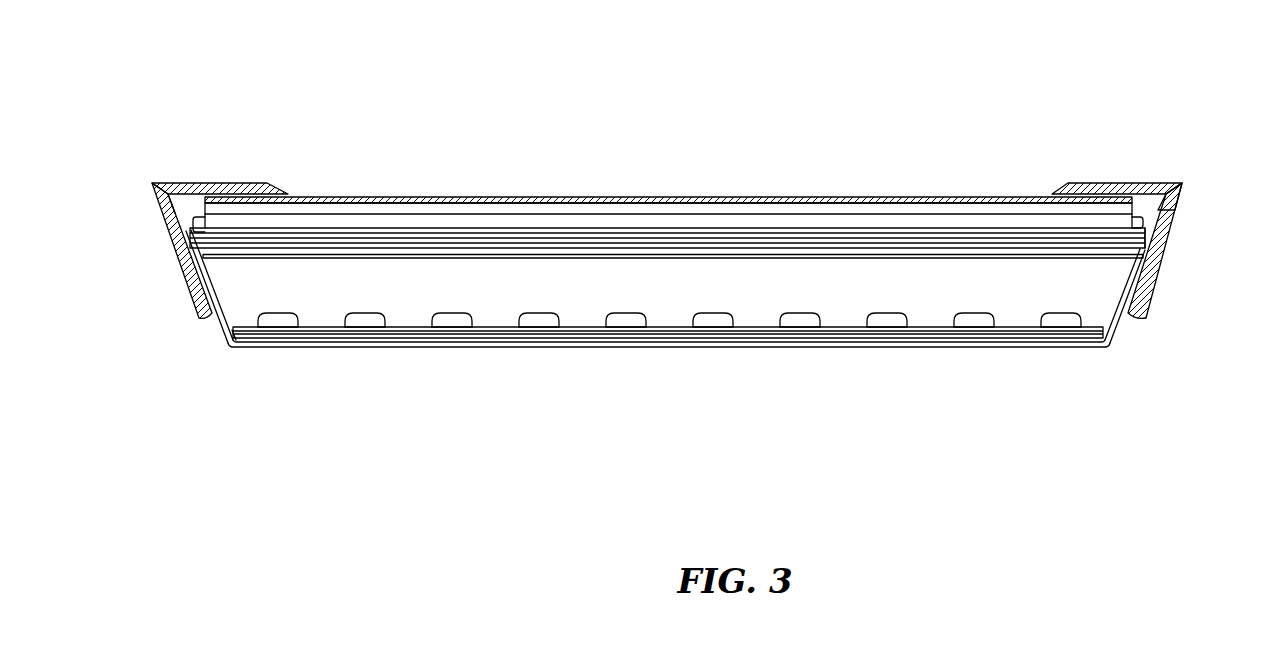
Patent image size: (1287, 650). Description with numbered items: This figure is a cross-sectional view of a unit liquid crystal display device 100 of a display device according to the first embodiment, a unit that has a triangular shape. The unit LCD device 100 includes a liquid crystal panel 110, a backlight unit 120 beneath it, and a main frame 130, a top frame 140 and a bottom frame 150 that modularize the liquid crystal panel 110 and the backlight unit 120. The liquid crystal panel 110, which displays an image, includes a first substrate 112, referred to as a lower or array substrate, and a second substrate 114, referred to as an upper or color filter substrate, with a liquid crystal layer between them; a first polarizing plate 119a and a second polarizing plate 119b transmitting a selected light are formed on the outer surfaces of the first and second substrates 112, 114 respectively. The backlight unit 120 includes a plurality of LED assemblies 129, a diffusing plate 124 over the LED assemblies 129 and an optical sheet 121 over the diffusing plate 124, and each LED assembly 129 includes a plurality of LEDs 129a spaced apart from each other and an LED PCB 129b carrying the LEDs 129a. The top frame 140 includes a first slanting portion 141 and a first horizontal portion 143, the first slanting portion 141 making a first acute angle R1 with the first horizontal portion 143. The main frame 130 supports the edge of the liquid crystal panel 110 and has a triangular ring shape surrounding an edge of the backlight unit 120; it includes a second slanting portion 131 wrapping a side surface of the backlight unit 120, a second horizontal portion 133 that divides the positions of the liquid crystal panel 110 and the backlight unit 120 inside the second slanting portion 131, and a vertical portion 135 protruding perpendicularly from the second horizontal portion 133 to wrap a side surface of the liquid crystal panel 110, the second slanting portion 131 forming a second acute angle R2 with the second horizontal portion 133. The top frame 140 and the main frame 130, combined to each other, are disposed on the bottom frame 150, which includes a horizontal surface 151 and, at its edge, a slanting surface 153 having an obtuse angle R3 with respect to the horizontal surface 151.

The unit liquid crystal display device 100 is at (680, 48).
The liquid crystal panel 110 is at (760, 118).
The first substrate 112 is at (632, 222).
The second substrate 114 is at (592, 205).
The first polarizing plate 119a is at (697, 227).
The second polarizing plate 119b is at (750, 195).
The backlight unit 120 is at (860, 433).
The optical sheet 121 is at (850, 248).
The diffusing plate 124 is at (762, 256).
The LED assembly 129 is at (572, 396).
The LED 129a is at (625, 331).
The LED PCB 129b is at (573, 331).
The main frame 130 is at (1240, 203).
The second slanting portion 131 is at (1158, 268).
The second horizontal portion 133 is at (1167, 230).
The vertical portion 135 is at (1145, 222).
The top frame 140 is at (113, 178).
The first slanting portion 141 is at (200, 256).
The first horizontal portion 143 is at (185, 186).
The bottom frame 150 is at (205, 394).
The horizontal surface 151 is at (268, 345).
The slanting surface 153 is at (222, 335).
The first acute angle R1 is at (172, 202).
The second acute angle R2 is at (1145, 236).
The obtuse angle R3 is at (235, 324).